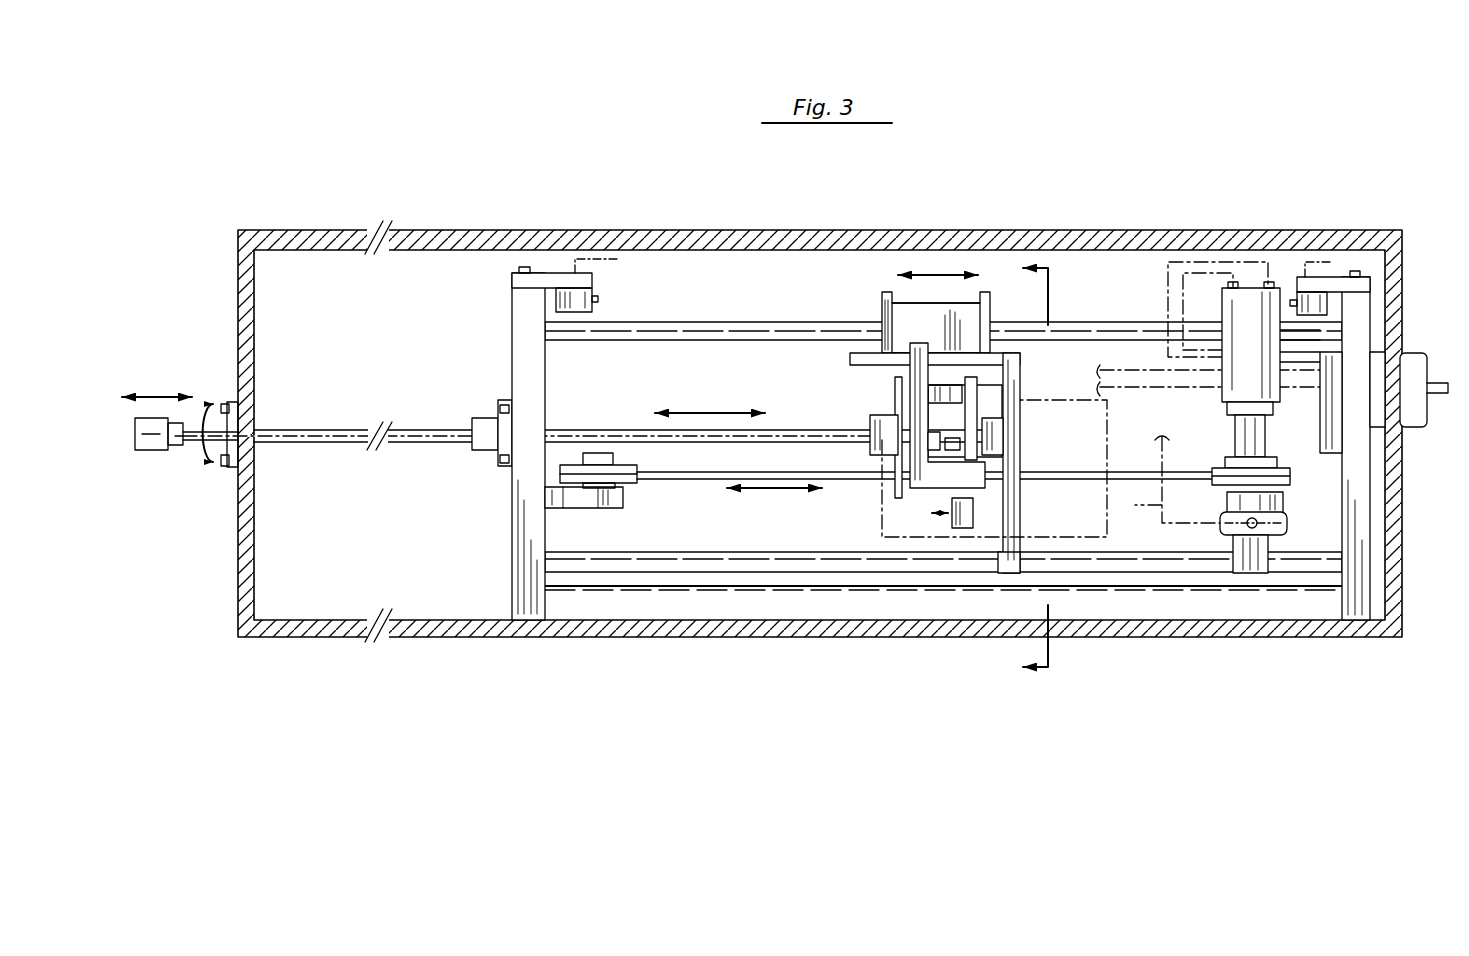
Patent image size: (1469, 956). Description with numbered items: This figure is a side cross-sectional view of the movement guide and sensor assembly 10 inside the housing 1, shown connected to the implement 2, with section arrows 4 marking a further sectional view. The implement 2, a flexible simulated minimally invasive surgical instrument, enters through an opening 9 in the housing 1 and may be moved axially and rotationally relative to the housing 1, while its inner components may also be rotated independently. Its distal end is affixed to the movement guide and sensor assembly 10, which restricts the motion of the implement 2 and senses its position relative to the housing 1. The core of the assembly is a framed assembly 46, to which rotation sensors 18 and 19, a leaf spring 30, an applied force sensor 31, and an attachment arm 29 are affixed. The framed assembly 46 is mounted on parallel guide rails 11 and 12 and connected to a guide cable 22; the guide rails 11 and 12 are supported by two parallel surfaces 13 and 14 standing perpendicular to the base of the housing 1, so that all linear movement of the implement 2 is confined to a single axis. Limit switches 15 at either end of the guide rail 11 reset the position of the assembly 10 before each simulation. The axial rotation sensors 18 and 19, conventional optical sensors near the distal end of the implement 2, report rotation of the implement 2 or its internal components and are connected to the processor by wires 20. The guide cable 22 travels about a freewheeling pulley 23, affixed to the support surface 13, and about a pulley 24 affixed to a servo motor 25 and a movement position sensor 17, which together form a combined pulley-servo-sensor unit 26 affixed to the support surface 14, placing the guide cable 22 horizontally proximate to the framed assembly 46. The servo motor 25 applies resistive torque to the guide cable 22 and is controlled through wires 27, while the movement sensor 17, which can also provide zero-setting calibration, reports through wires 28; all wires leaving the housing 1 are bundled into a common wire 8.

The housing 1 is at (457, 226).
The implement 2 is at (192, 433).
The section line 4- 4 is at (1048, 470).
The common wire 8 is at (1447, 375).
The opening 9 is at (230, 405).
The movement guide and sensor assembly 10 is at (882, 310).
The guide rail 11 is at (747, 320).
The guide rail 12 is at (757, 552).
The parallel support surface 13 is at (516, 325).
The parallel support surface 14 is at (1360, 322).
The limit switch 15 is at (600, 300).
The movement position sensor 17 is at (1282, 524).
The axial rotation sensor 18 is at (894, 483).
The axial rotation sensor 19 is at (968, 400).
The wires 20 is at (882, 522).
The guide cable 22 is at (688, 481).
The freewheeling pulley 23 is at (628, 484).
The pulley 24 is at (1218, 470).
The servo motor 25 is at (1243, 320).
The pulley-servo-sensor unit 26 is at (1270, 408).
The wires 27 is at (1183, 300).
The wires 28 is at (1167, 488).
The attachment arm 29 is at (914, 374).
The leaf spring 30 is at (1003, 423).
The applied force sensor 31 is at (932, 437).
The framed assembly 46 is at (975, 322).